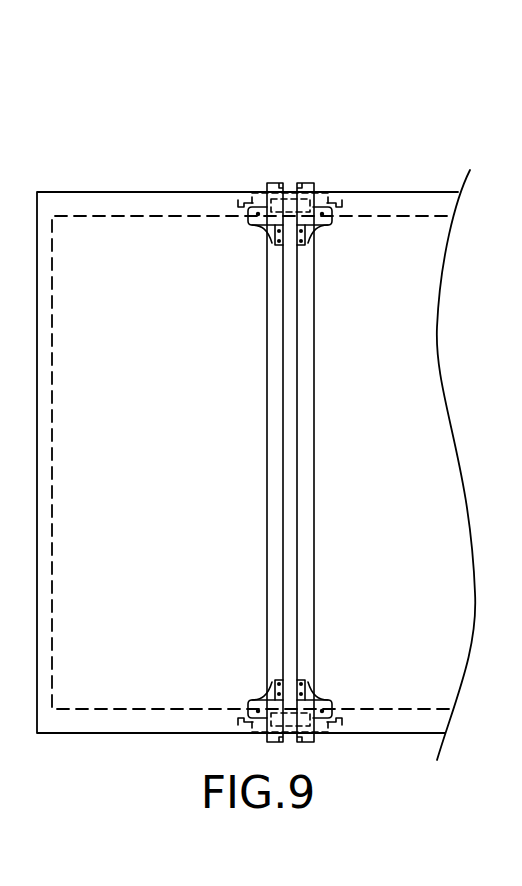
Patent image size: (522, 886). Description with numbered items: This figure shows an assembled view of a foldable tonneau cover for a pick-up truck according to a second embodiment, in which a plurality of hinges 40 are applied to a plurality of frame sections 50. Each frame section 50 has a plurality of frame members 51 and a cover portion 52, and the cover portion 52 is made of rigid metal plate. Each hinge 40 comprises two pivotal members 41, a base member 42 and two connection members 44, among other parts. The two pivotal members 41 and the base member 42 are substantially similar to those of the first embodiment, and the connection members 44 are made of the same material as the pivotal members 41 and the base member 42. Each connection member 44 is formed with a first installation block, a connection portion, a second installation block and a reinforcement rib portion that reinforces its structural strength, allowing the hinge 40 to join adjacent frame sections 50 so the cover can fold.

The hinge 40 is at (337, 55).
The pivotal member 41 is at (275, 183).
The base member 42 is at (290, 194).
The connection member 44 is at (240, 203).
The frame section 50 is at (78, 93).
The frame member 51 is at (72, 202).
The cover portion 52 is at (127, 223).